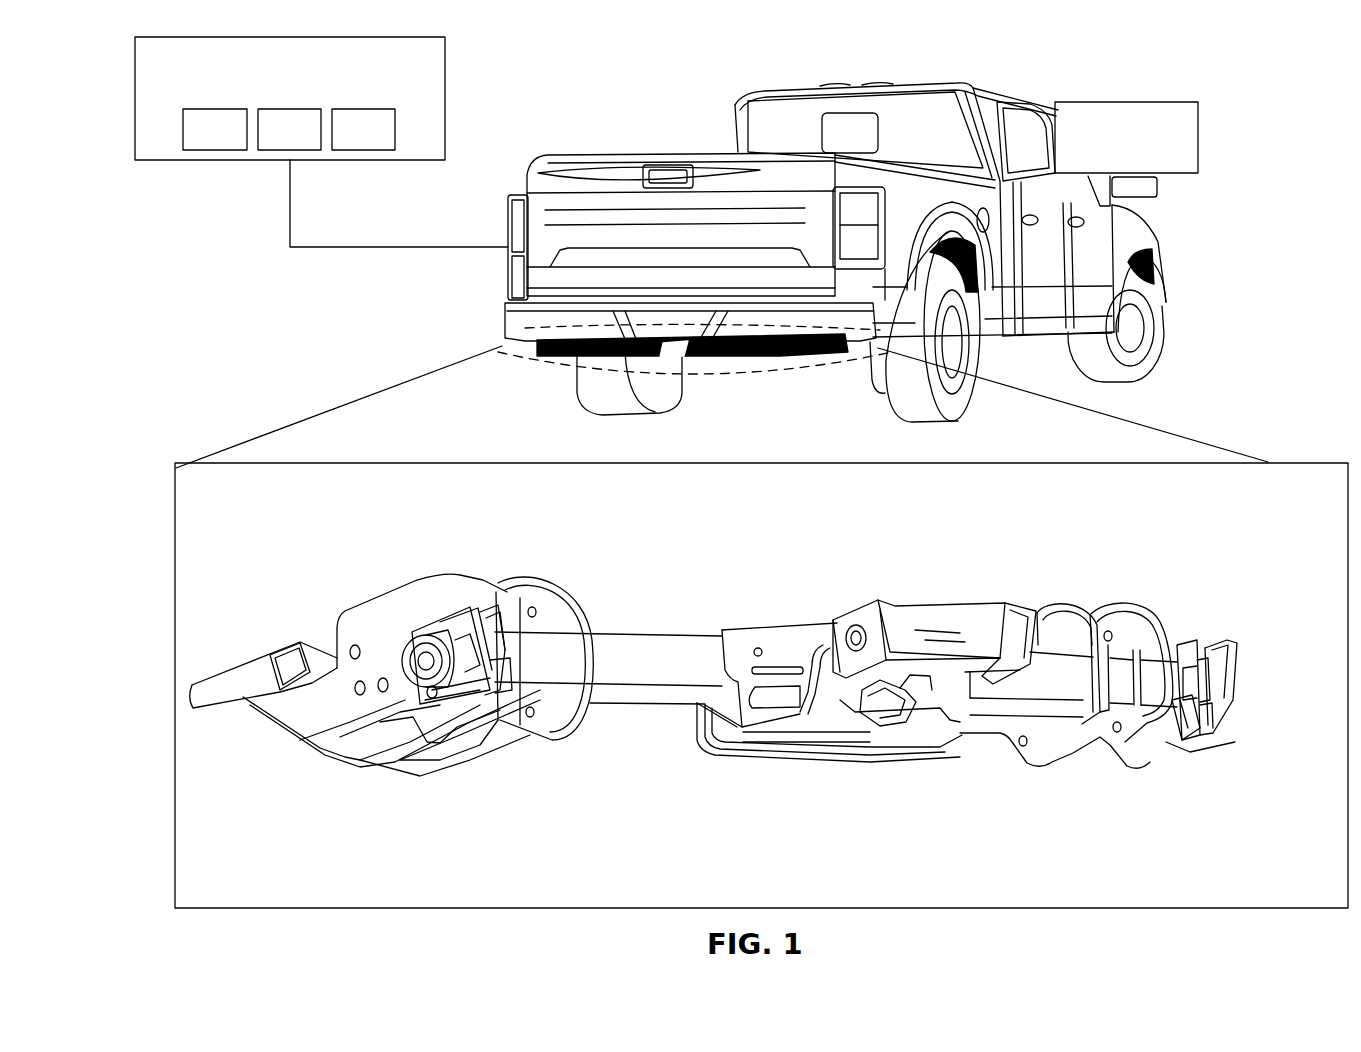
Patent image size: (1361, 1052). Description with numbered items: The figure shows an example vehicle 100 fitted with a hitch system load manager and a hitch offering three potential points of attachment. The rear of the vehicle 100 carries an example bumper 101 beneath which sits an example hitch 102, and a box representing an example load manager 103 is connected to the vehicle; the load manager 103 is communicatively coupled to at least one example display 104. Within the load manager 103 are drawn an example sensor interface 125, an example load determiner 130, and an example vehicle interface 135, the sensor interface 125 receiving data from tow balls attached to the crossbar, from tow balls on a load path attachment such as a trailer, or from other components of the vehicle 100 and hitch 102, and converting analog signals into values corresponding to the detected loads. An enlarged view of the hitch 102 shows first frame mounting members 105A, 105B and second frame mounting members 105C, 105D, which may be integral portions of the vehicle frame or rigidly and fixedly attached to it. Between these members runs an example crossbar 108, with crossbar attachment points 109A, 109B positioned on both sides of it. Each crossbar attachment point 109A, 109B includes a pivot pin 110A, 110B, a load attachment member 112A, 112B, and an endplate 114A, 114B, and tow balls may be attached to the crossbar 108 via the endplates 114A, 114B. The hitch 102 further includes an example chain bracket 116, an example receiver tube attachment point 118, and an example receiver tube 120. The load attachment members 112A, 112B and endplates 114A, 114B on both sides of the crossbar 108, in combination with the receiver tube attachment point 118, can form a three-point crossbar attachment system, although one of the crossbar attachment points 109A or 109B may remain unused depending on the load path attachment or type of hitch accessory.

The vehicle 100 is at (1247, 94).
The bumper 101 is at (498, 315).
The hitch 102 is at (690, 352).
The load manager 103 is at (269, 101).
The display 104 is at (1147, 163).
The first frame mounting member 105A is at (407, 580).
The first frame mounting member 105B is at (558, 590).
The second frame mounting member 105C is at (1042, 605).
The second frame mounting member 105D is at (1155, 617).
The crossbar 108 is at (605, 637).
The crossbar attachment point 109A is at (466, 846).
The crossbar attachment point 109B is at (1218, 792).
The pivot pin 110A is at (413, 667).
The pivot pin 110B is at (1238, 683).
The load attachment member 112A is at (458, 680).
The load attachment member 112B is at (1222, 725).
The endplate 114A is at (497, 682).
The endplate 114B is at (1195, 720).
The chain bracket 116 is at (867, 732).
The receiver tube attachment point 118 is at (918, 598).
The receiver tube 120 is at (896, 702).
The sensor interface 125 is at (196, 142).
The load determiner 130 is at (270, 142).
The vehicle interface 135 is at (344, 142).